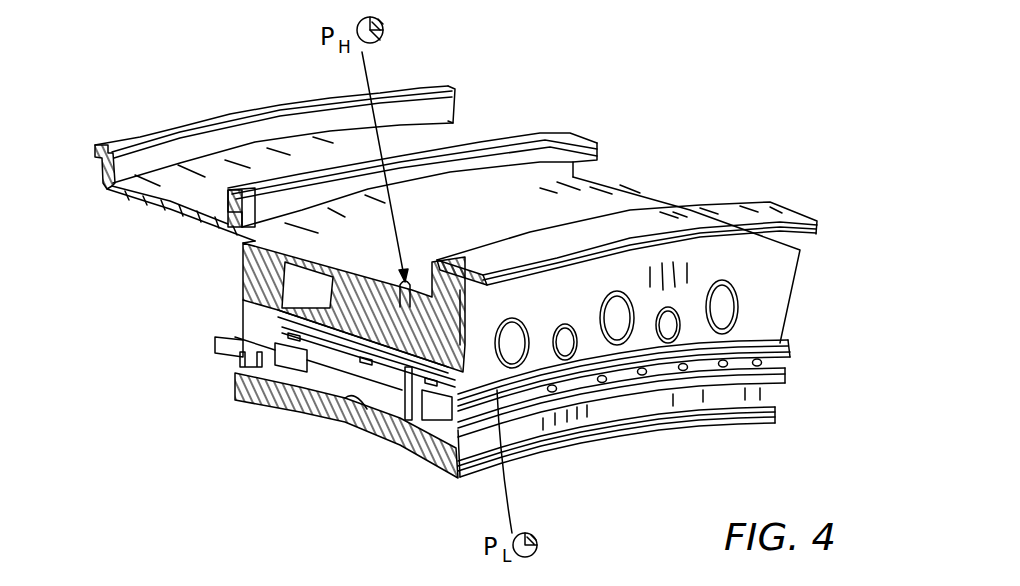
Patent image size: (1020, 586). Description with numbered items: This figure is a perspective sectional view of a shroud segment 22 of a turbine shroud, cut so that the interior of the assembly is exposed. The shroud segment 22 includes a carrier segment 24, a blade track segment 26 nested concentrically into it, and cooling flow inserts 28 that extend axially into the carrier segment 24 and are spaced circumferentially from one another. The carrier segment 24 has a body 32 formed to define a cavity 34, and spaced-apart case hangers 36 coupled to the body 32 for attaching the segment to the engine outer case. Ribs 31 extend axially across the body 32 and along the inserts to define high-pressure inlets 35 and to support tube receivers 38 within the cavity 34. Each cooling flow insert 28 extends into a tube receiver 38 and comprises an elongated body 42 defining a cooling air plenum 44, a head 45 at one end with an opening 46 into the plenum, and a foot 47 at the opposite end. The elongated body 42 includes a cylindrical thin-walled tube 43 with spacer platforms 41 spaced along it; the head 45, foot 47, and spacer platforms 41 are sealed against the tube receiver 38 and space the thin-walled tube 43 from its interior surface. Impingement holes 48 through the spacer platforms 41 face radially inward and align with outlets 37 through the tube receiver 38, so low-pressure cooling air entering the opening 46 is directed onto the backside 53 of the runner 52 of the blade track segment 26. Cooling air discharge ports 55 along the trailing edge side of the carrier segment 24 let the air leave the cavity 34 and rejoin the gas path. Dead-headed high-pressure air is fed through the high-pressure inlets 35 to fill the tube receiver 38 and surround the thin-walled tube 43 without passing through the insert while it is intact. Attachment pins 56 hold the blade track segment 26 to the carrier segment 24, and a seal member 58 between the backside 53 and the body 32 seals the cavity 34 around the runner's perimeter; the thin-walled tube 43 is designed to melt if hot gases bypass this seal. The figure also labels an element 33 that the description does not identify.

The shroud segment 22 is at (708, 98).
The carrier segment 24 is at (606, 186).
The blade track segment 26 is at (680, 422).
The cooling flow insert 28 is at (505, 395).
The ribs 31 is at (320, 297).
The body 32 is at (254, 293).
The cooling holes 33 is at (527, 326).
The cavity 34 is at (279, 368).
The high-pressure inlet 35 is at (407, 274).
The case hangers 36 is at (557, 132).
The outlets 37 is at (390, 390).
The tube receiver 38 is at (466, 345).
The spacer platforms 41 is at (317, 300).
The elongated body 42 is at (372, 307).
The thin-walled tube 43 is at (310, 345).
The cooling air plenum 44 is at (337, 300).
The head 45 is at (458, 443).
The opening 46 is at (495, 395).
The foot 47 is at (250, 380).
The impingement holes 48 is at (316, 380).
The runner 52 is at (648, 425).
The backside 53 is at (352, 380).
The cooling air discharge ports 55 is at (612, 429).
The attachment pins 56 is at (738, 309).
The seal member 58 is at (228, 364).